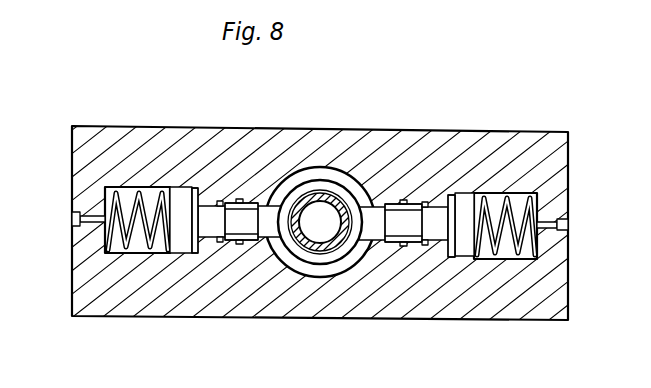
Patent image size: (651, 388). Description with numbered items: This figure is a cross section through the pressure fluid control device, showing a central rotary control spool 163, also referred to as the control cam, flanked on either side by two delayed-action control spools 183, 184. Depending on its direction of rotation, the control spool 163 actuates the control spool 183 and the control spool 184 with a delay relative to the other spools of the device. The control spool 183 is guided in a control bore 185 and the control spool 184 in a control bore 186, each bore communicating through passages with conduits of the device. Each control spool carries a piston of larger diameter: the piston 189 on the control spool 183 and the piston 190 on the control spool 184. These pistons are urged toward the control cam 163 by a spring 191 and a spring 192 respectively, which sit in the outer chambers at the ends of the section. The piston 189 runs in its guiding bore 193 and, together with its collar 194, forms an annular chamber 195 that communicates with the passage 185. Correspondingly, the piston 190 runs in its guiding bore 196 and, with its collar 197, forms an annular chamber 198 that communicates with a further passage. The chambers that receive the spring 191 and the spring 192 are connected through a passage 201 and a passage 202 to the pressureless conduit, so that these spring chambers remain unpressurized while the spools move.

The control spool 163 is at (317, 175).
The control spool 183 is at (435, 208).
The control spool 184 is at (247, 200).
The control bore 185 is at (393, 244).
The control bore 186 is at (252, 242).
The piston 189 is at (467, 208).
The piston 190 is at (180, 200).
The spring 191 is at (523, 208).
The spring 192 is at (123, 197).
The guiding bore 193 is at (497, 195).
The collar 194 is at (455, 257).
The annular chamber 195 is at (450, 208).
The guiding bore 196 is at (150, 190).
The collar 197 is at (197, 197).
The annular chamber 198 is at (190, 255).
The passage 201 is at (557, 222).
The passage 202 is at (78, 217).